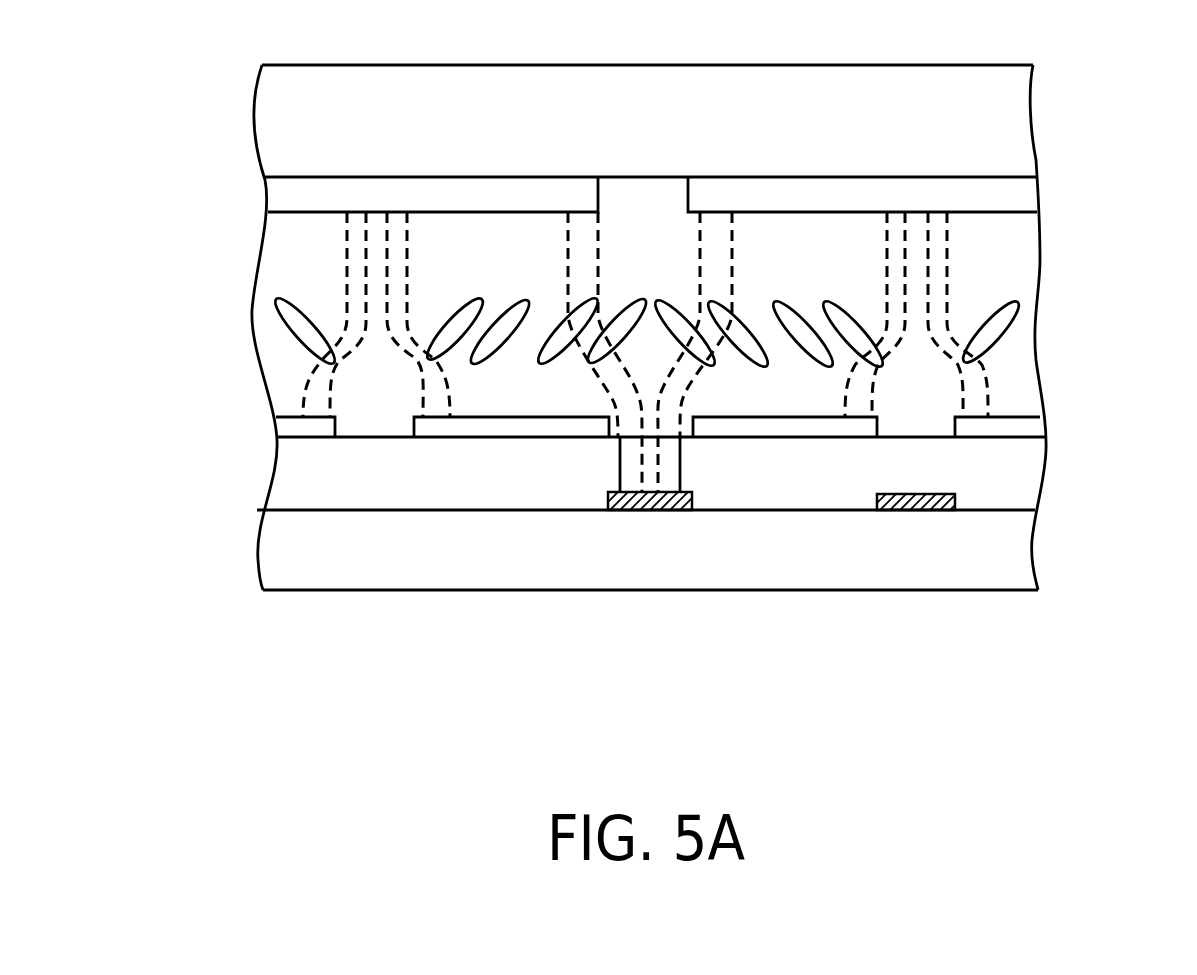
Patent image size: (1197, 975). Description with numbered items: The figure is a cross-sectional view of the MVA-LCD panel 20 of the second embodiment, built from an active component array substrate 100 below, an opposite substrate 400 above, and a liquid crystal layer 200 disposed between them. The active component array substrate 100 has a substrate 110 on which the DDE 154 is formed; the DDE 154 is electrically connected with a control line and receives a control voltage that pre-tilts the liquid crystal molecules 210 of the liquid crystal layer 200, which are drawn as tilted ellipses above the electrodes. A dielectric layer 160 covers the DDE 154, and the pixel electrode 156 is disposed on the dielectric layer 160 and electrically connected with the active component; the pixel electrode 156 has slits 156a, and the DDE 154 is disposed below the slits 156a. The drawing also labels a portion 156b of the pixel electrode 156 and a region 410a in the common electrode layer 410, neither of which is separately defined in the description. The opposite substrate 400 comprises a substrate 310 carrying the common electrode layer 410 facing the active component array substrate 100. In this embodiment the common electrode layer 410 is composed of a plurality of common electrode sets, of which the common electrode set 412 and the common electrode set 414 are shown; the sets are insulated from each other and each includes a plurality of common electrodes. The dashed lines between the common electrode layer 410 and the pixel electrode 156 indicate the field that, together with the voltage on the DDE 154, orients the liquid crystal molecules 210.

The MVA-LCD panel 20 is at (1031, 740).
The active component array substrate 100 is at (200, 415).
The substrate 110 is at (1012, 556).
The DDE 154 is at (651, 512).
The pixel electrode 156 is at (1033, 432).
The slits 156a is at (614, 428).
The main portion of pixel electrode 156b is at (340, 427).
The dielectric layer 160 is at (1023, 480).
The liquid crystal layer 200 is at (200, 212).
The liquid crystal molecules 210 is at (995, 333).
The substrate 310 is at (1013, 134).
The opposite substrate 400 is at (200, 65).
The common electrode layer 410 is at (1050, 198).
The slit of common electrode 410a is at (602, 192).
The common electrode set 412 is at (475, 195).
The common electrode set 414 is at (868, 195).